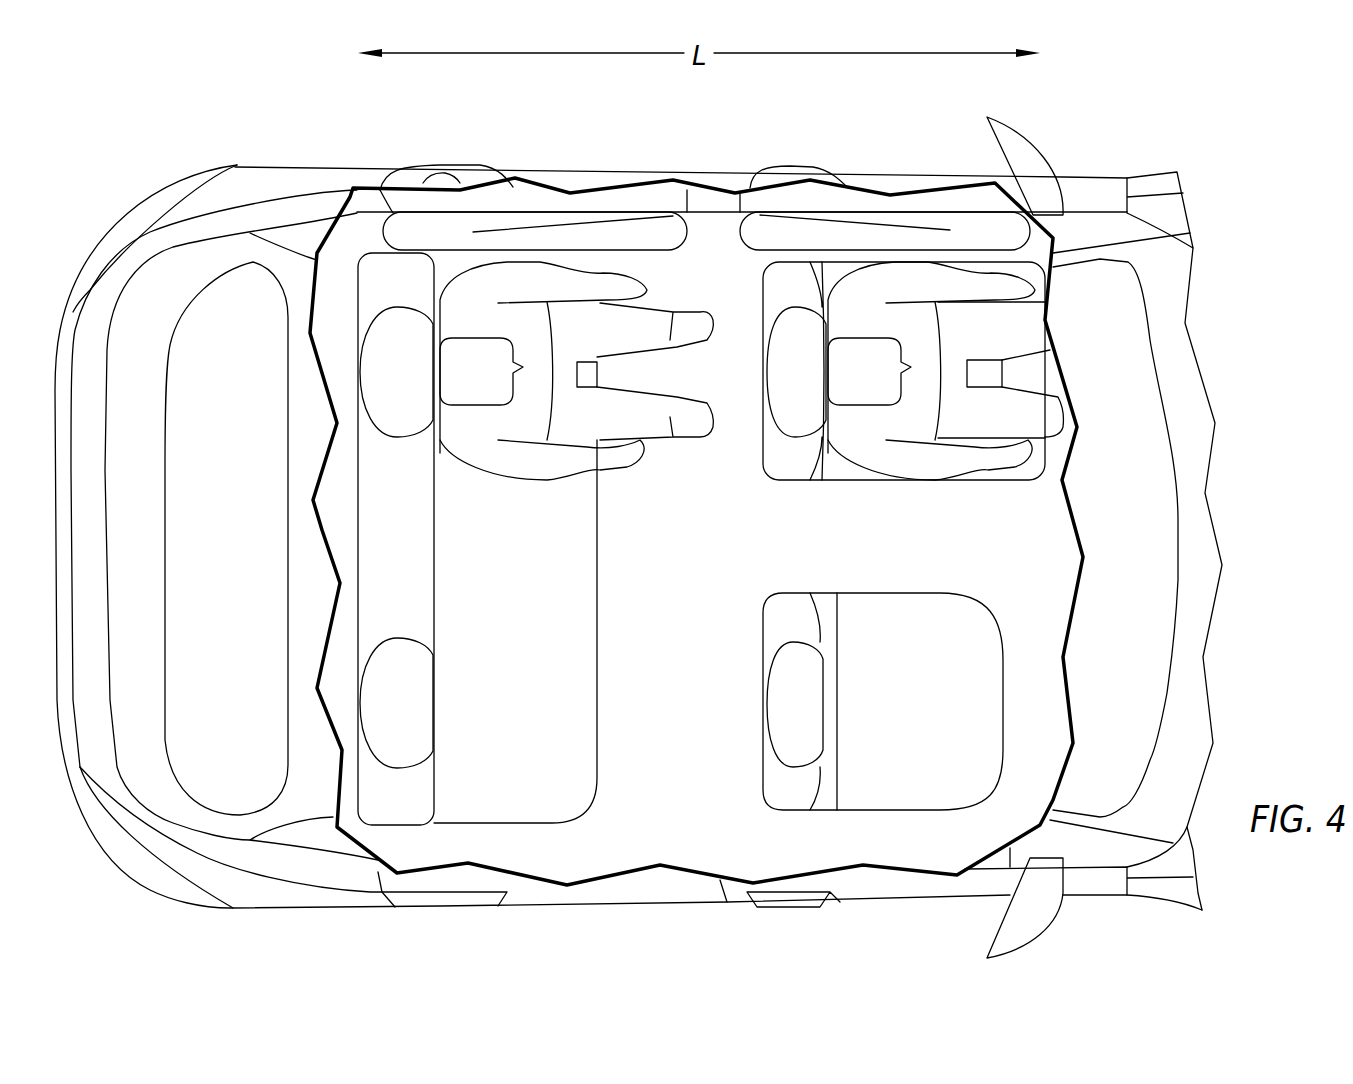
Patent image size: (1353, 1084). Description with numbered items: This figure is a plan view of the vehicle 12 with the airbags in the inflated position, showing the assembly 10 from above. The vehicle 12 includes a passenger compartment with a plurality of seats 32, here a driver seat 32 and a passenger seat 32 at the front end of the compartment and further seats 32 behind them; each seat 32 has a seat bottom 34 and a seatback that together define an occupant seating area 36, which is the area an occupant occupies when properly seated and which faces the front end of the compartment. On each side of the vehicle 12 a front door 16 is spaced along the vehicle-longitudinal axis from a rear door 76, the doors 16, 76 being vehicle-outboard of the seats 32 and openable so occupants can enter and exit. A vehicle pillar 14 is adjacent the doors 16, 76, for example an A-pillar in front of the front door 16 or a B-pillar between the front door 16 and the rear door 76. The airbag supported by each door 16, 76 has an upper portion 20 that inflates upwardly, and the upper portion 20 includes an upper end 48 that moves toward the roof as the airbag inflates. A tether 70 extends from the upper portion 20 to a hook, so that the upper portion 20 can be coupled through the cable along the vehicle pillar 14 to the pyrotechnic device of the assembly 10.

The assembly 10 is at (570, 157).
The vehicle 12 is at (1135, 105).
The vehicle pillar 14 is at (708, 200).
The front door 16 is at (973, 193).
The upper portion 20 is at (739, 177).
The upper end 48 is at (355, 207).
The seat 32 is at (756, 469).
The seat bottom 34 is at (555, 662).
The occupant seating area 36 is at (636, 375).
The tether 70 is at (533, 227).
The rear door 76 is at (460, 193).